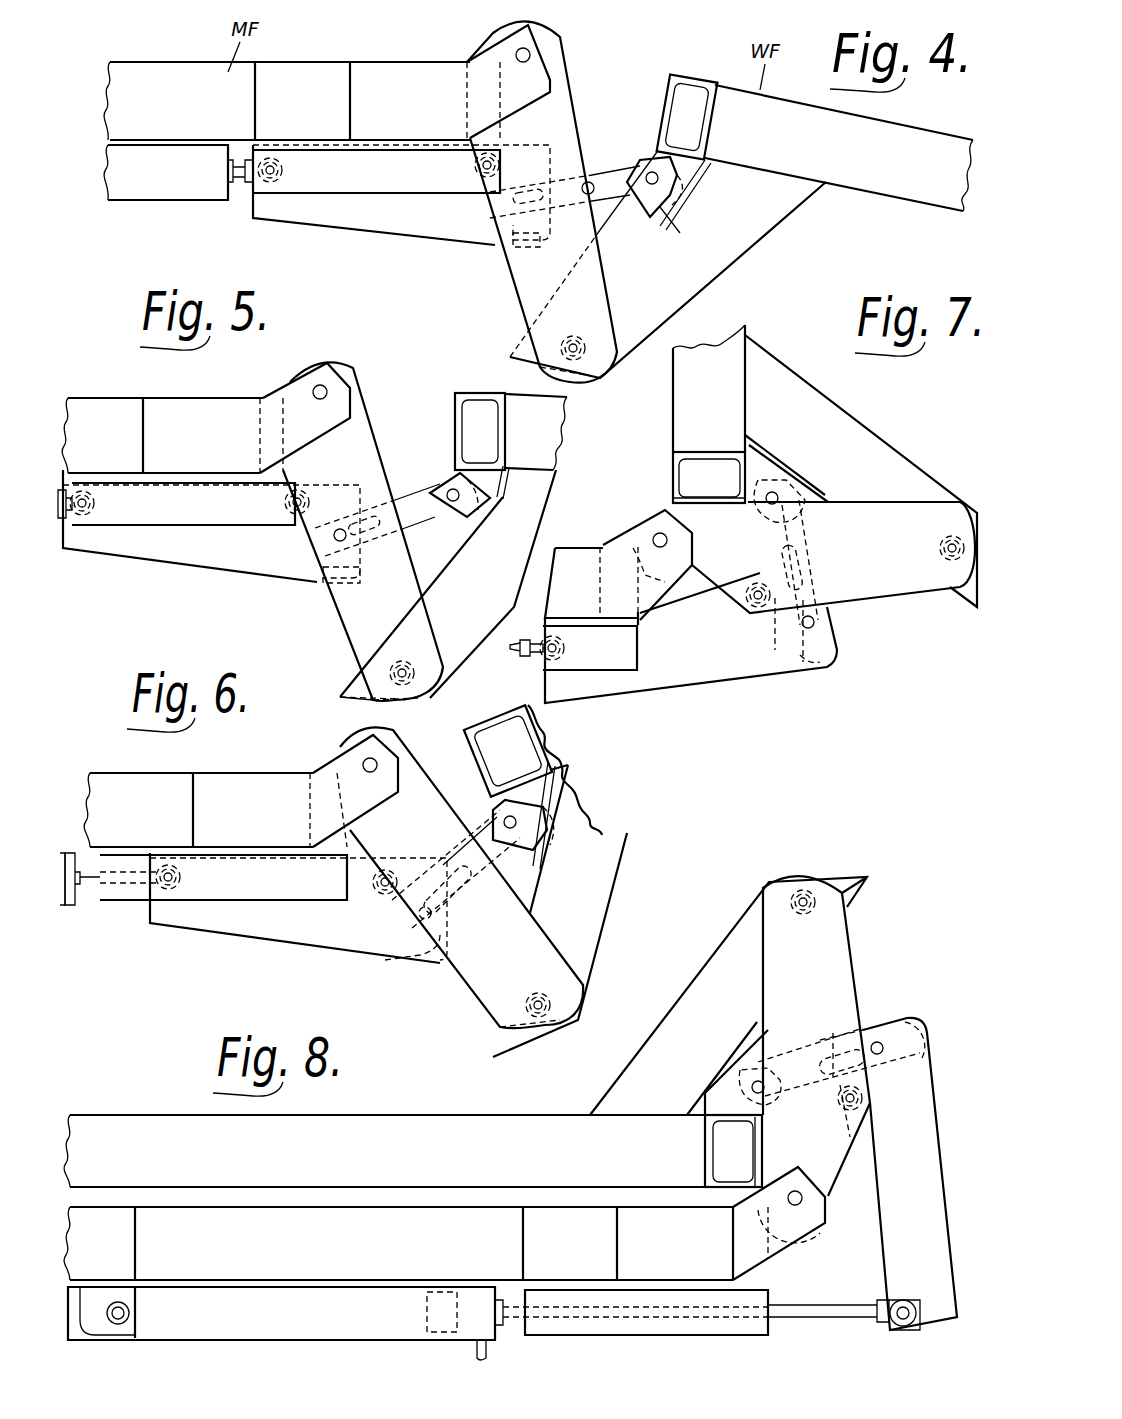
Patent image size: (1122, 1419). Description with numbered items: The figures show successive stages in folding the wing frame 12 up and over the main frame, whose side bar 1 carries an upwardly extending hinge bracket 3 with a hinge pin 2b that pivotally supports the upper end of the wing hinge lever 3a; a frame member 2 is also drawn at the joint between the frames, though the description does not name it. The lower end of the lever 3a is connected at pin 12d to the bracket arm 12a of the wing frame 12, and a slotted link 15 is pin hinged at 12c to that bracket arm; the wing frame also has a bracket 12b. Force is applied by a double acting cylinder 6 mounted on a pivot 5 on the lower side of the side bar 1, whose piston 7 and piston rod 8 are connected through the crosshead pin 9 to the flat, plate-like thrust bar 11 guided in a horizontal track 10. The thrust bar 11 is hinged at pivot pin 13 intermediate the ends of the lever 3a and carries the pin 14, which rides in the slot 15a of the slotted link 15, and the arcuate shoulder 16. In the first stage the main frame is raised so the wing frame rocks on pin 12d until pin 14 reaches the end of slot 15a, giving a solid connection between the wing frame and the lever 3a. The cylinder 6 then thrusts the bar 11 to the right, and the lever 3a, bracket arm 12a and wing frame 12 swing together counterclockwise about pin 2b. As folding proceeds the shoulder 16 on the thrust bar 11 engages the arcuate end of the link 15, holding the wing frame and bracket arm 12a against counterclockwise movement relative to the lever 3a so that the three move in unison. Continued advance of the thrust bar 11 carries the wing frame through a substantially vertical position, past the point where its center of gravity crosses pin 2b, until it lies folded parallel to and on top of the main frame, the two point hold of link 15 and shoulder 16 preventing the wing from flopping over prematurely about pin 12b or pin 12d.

In FIG. 4, the main frame side bar 1 is at (152, 76).
In FIG. 5, the main frame side bar 1 is at (172, 435).
In FIG. 6, the main frame side bar 1 is at (96, 772).
In FIG. 8, the main frame side bar 1 is at (366, 1253).
In FIG. 4, the tubular frame member 2 is at (690, 82).
In FIG. 5, the tubular frame member 2 is at (480, 431).
In FIG. 7, the tubular frame member 2 is at (676, 470).
In FIG. 6, the tubular frame member 2 is at (508, 750).
In FIG. 8, the tubular frame member 2 is at (712, 1148).
In FIG. 4, the hinge pin 2b is at (532, 57).
In FIG. 5, the hinge pin 2b is at (328, 389).
In FIG. 7, the hinge pin 2b is at (668, 540).
In FIG. 6, the hinge pin 2b is at (378, 764).
In FIG. 8, the hinge pin 2b is at (803, 1198).
In FIG. 4, the main frame hinge bracket 3 is at (478, 60).
In FIG. 5, the main frame hinge bracket 3 is at (332, 364).
In FIG. 7, the main frame hinge bracket 3 is at (660, 515).
In FIG. 6, the main frame hinge bracket 3 is at (325, 762).
In FIG. 8, the main frame hinge bracket 3 is at (782, 1182).
In FIG. 4, the wing hinge lever 3a is at (554, 36).
In FIG. 5, the wing hinge lever 3a is at (362, 408).
In FIG. 7, the wing hinge lever 3a is at (916, 590).
In FIG. 6, the wing hinge lever 3a is at (346, 732).
In FIG. 8, the wing hinge lever 3a is at (845, 976).
In FIG. 8, the cylinder pivot 5 is at (118, 1322).
In FIG. 4, the double acting cylinder 6 is at (150, 192).
In FIG. 6, the double acting cylinder 6 is at (64, 906).
In FIG. 8, the double acting cylinder 6 is at (293, 1340).
In FIG. 8, the piston 7 is at (444, 1325).
In FIG. 4, the piston rod 8 is at (236, 190).
In FIG. 5, the piston rod 8 is at (65, 504).
In FIG. 7, the piston rod 8 is at (515, 660).
In FIG. 6, the piston rod 8 is at (92, 882).
In FIG. 8, the piston rod 8 is at (826, 1320).
In FIG. 4, the crosshead pin 9 is at (270, 200).
In FIG. 5, the crosshead pin 9 is at (85, 520).
In FIG. 7, the crosshead pin 9 is at (565, 650).
In FIG. 6, the crosshead pin 9 is at (165, 892).
In FIG. 8, the crosshead pin 9 is at (905, 1326).
In FIG. 4, the horizontal track 10 is at (382, 186).
In FIG. 5, the horizontal track 10 is at (166, 530).
In FIG. 7, the horizontal track 10 is at (640, 657).
In FIG. 6, the horizontal track 10 is at (278, 902).
In FIG. 8, the horizontal track 10 is at (645, 1337).
In FIG. 4, the thrust bar 11 is at (338, 216).
In FIG. 5, the thrust bar 11 is at (202, 560).
In FIG. 7, the thrust bar 11 is at (752, 670).
In FIG. 6, the thrust bar 11 is at (214, 930).
In FIG. 8, the thrust bar 11 is at (940, 1140).
In FIG. 4, the wing frame 12 is at (932, 126).
In FIG. 5, the wing frame 12 is at (503, 390).
In FIG. 7, the wing frame 12 is at (670, 428).
In FIG. 6, the wing frame 12 is at (565, 770).
In FIG. 8, the wing frame 12 is at (438, 1128).
In FIG. 4, the wing frame bracket arm 12a is at (785, 224).
In FIG. 5, the wing frame bracket arm 12a is at (480, 610).
In FIG. 7, the wing frame bracket arm 12a is at (870, 430).
In FIG. 6, the wing frame bracket arm 12a is at (628, 862).
In FIG. 8, the wing frame bracket arm 12a is at (712, 962).
In FIG. 4, the wing frame bracket 12b is at (668, 224).
In FIG. 5, the wing frame bracket 12b is at (470, 532).
In FIG. 7, the wing frame bracket 12b is at (790, 470).
In FIG. 6, the wing frame bracket 12b is at (545, 796).
In FIG. 8, the wing frame bracket 12b is at (735, 1070).
In FIG. 4, the pin hinge 12c is at (642, 190).
In FIG. 5, the pin hinge 12c is at (470, 503).
In FIG. 7, the pin hinge 12c is at (780, 496).
In FIG. 6, the pin hinge 12c is at (520, 828).
In FIG. 8, the pin hinge 12c is at (750, 1078).
In FIG. 4, the pin 12d is at (582, 344).
In FIG. 5, the pin 12d is at (402, 664).
In FIG. 7, the pin 12d is at (942, 546).
In FIG. 6, the pin 12d is at (544, 1015).
In FIG. 8, the pin 12d is at (813, 890).
In FIG. 4, the pivot pin 13 is at (478, 172).
In FIG. 5, the pivot pin 13 is at (302, 494).
In FIG. 7, the pivot pin 13 is at (750, 603).
In FIG. 6, the pivot pin 13 is at (388, 872).
In FIG. 8, the pivot pin 13 is at (862, 1098).
In FIG. 4, the pin 14 is at (520, 242).
In FIG. 5, the pin 14 is at (332, 537).
In FIG. 7, the pin 14 is at (816, 623).
In FIG. 6, the pin 14 is at (415, 918).
In FIG. 8, the pin 14 is at (879, 1040).
In FIG. 4, the slotted link 15 is at (605, 170).
In FIG. 5, the slotted link 15 is at (415, 490).
In FIG. 7, the slotted link 15 is at (802, 530).
In FIG. 6, the slotted link 15 is at (480, 826).
In FIG. 8, the slotted link 15 is at (800, 1050).
In FIG. 4, the slot 15a is at (580, 158).
In FIG. 5, the slot 15a is at (376, 552).
In FIG. 7, the slot 15a is at (808, 580).
In FIG. 6, the slot 15a is at (448, 870).
In FIG. 8, the slot 15a is at (822, 1080).
In FIG. 4, the arcuate shoulder 16 is at (515, 258).
In FIG. 5, the arcuate shoulder 16 is at (322, 586).
In FIG. 7, the arcuate shoulder 16 is at (822, 665).
In FIG. 6, the arcuate shoulder 16 is at (412, 970).
In FIG. 8, the arcuate shoulder 16 is at (928, 1033).